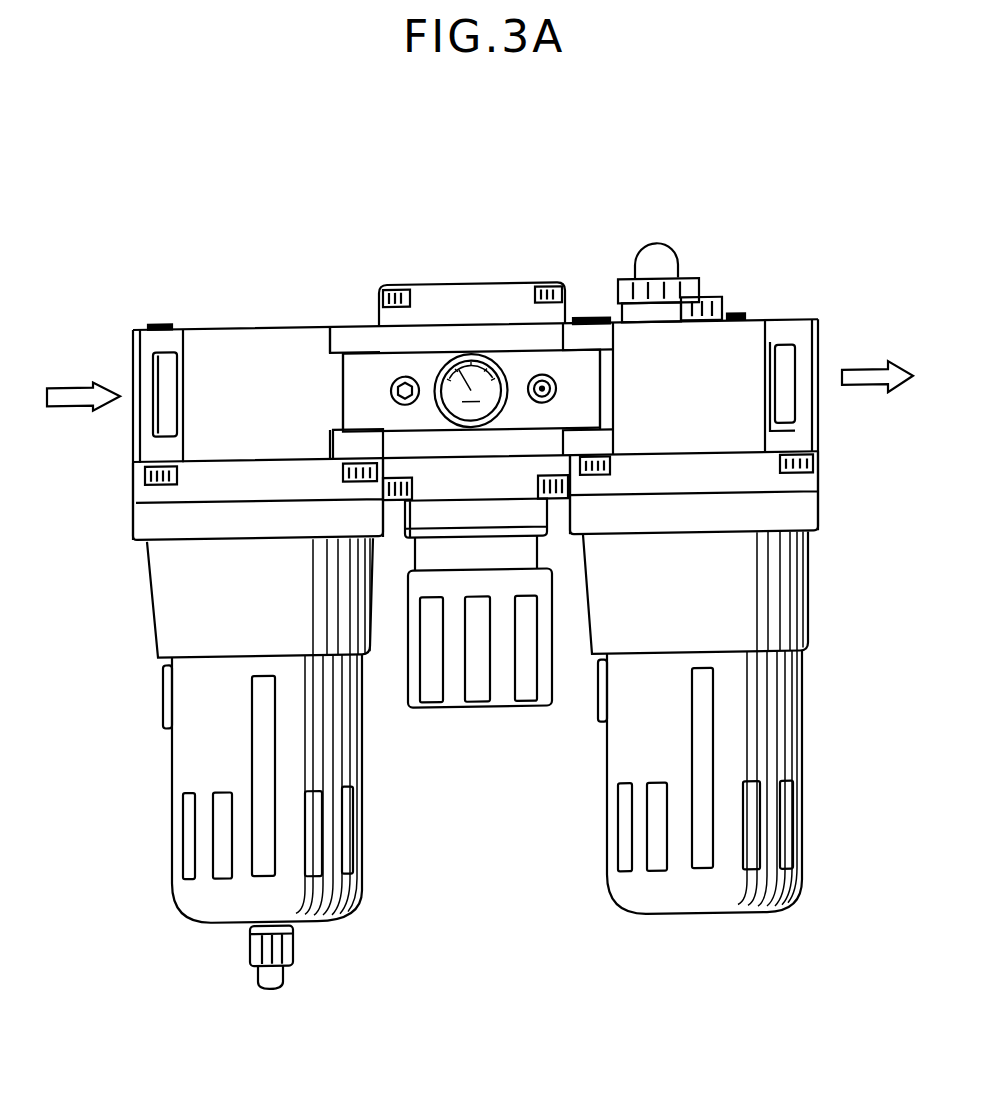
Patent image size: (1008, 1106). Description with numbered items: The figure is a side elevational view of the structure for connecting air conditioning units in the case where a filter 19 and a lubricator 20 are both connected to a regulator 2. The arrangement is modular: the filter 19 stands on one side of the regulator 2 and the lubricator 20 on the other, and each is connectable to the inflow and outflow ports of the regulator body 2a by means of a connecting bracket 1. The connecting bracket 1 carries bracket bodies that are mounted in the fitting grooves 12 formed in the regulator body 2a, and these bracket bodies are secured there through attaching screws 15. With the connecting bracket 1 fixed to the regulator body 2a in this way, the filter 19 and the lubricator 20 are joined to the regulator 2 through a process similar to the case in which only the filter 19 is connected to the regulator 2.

The connecting bracket 1 is at (358, 372).
The fitting groove 12 is at (370, 360).
The regulator 2 is at (467, 272).
The regulator body 2a is at (512, 298).
The attaching screw 15 is at (542, 386).
The filter 19 is at (360, 908).
The lubricator 20 is at (605, 884).